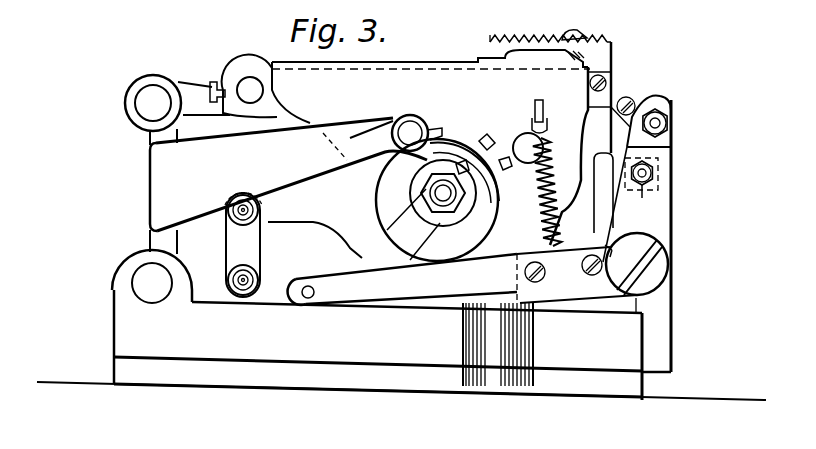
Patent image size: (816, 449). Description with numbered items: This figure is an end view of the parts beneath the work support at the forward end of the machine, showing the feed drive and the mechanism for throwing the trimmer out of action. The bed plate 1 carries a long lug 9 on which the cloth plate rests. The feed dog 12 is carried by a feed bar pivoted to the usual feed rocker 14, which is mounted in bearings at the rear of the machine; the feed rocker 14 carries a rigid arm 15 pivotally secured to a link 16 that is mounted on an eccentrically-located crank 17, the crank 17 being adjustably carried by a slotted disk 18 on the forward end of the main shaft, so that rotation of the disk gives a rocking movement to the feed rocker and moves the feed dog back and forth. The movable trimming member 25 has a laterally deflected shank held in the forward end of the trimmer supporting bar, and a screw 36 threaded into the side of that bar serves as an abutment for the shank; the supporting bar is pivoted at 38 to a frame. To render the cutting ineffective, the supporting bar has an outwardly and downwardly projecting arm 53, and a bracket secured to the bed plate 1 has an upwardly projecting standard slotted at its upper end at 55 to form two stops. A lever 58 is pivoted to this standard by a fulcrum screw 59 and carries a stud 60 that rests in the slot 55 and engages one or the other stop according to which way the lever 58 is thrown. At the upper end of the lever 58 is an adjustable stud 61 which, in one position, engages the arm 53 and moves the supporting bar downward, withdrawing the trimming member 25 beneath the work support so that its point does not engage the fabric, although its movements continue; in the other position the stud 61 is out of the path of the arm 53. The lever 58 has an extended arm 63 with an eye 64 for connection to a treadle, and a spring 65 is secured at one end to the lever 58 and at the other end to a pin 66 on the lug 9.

The bed plate 1 is at (391, 325).
The long lug 9 is at (431, 105).
The feed dog 12 is at (612, 50).
The feed rocker 14 is at (152, 117).
The rigid arm 15 is at (288, 174).
The link 16 is at (458, 145).
The eccentrically-located crank 17 is at (448, 203).
The slotted disk 18 is at (383, 200).
The movable trimming member 25 is at (583, 30).
The screw 36 is at (608, 87).
The pivot 38 is at (247, 86).
The arm 53 is at (676, 143).
The slot 55 is at (658, 172).
The lever 58 is at (657, 199).
The fulcrum screw 59 is at (650, 263).
The stud 60 is at (638, 204).
The stud 61 is at (672, 125).
The extended arm 63 is at (463, 276).
The eye 64 is at (308, 298).
The spring 65 is at (543, 163).
The pin 66 is at (541, 112).